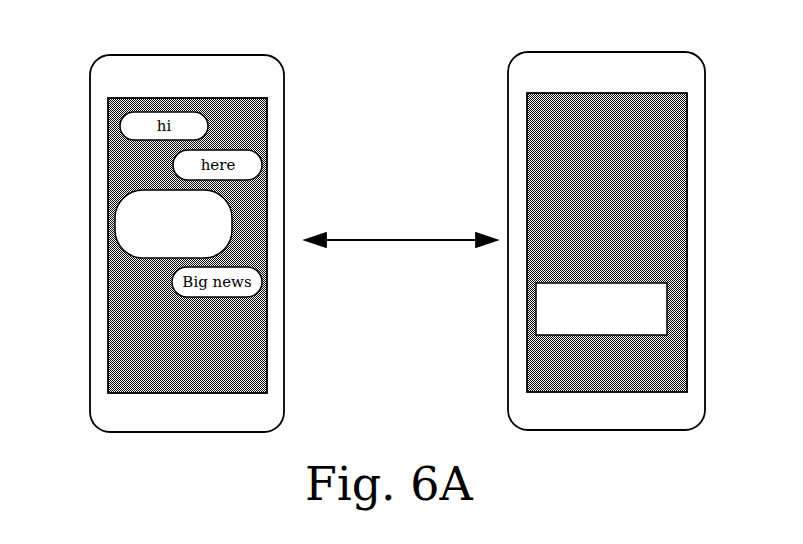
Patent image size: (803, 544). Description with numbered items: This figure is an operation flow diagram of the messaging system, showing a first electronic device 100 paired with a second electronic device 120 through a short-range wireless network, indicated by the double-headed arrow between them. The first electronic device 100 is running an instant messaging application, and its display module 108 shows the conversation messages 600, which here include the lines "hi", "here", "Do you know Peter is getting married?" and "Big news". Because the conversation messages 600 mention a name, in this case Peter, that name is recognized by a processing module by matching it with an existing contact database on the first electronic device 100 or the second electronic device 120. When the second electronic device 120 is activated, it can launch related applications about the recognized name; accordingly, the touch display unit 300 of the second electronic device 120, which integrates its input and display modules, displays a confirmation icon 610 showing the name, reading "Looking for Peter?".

The first electronic device 100 is at (157, 432).
The display module 108 is at (123, 397).
The conversation messages 600 is at (113, 254).
The second electronic device 120 is at (583, 430).
The touch display unit 300 is at (612, 393).
The confirmation icon 610 is at (535, 323).